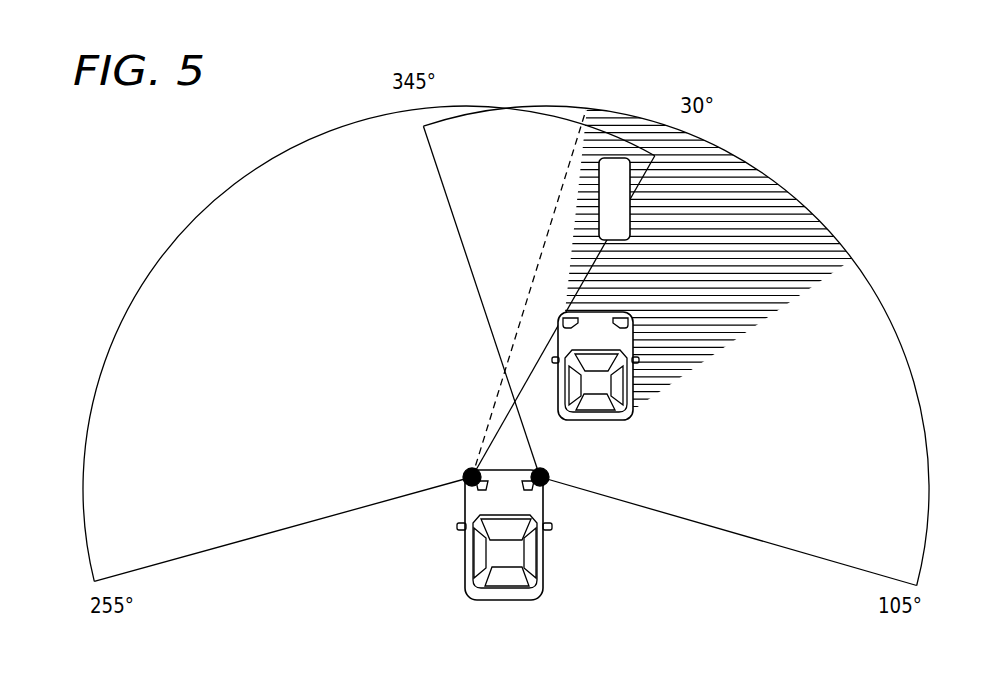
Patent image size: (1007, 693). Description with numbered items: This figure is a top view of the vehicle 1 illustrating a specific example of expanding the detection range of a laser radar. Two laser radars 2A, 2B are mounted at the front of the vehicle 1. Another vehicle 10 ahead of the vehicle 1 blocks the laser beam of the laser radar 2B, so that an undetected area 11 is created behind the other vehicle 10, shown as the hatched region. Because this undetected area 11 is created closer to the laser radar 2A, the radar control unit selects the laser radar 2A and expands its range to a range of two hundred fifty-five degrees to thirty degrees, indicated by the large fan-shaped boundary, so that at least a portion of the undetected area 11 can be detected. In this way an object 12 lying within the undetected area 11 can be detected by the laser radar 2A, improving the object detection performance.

The vehicle 1 is at (545, 563).
The laser radar 2A is at (460, 486).
The laser radar 2B is at (549, 486).
The another vehicle 10 is at (612, 422).
The undetected area 11 is at (690, 362).
The object 12 is at (620, 166).